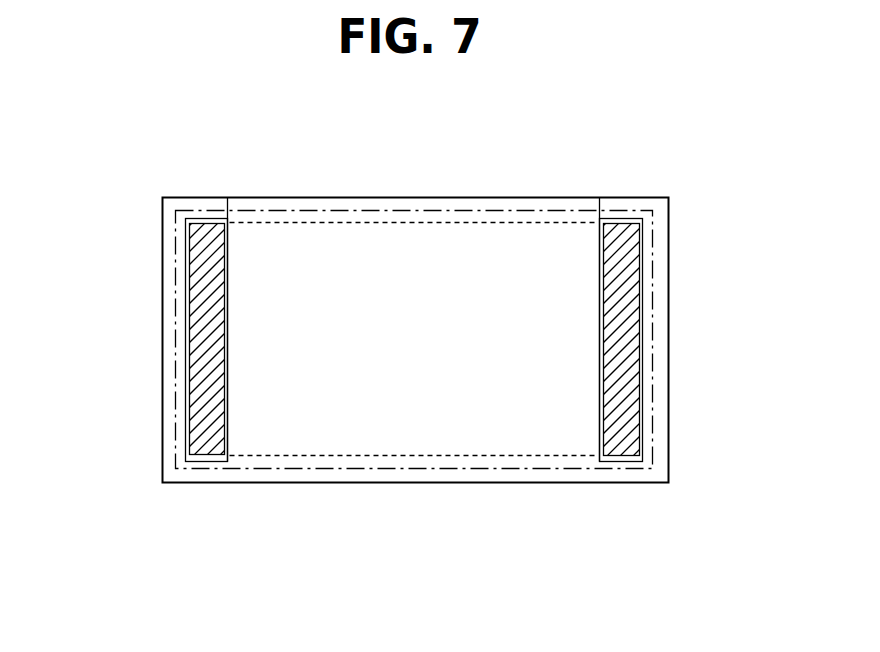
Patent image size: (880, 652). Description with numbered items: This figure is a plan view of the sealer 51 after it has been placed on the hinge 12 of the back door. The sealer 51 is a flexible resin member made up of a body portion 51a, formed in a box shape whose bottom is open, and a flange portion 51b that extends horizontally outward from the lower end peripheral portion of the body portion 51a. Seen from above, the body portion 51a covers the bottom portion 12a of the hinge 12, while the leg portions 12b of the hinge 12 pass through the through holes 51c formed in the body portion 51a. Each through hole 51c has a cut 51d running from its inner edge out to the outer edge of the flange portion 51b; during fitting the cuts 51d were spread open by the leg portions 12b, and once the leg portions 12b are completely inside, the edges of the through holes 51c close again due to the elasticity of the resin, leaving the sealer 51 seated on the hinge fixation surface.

The sealer 51 is at (256, 496).
The body portion 51a is at (396, 428).
The flange portion 51b is at (373, 208).
The through hole 51c is at (175, 380).
The cut 51d is at (230, 203).
The hinge 12 is at (553, 470).
The bottom portion 12a is at (456, 243).
The leg portion 12b is at (205, 326).